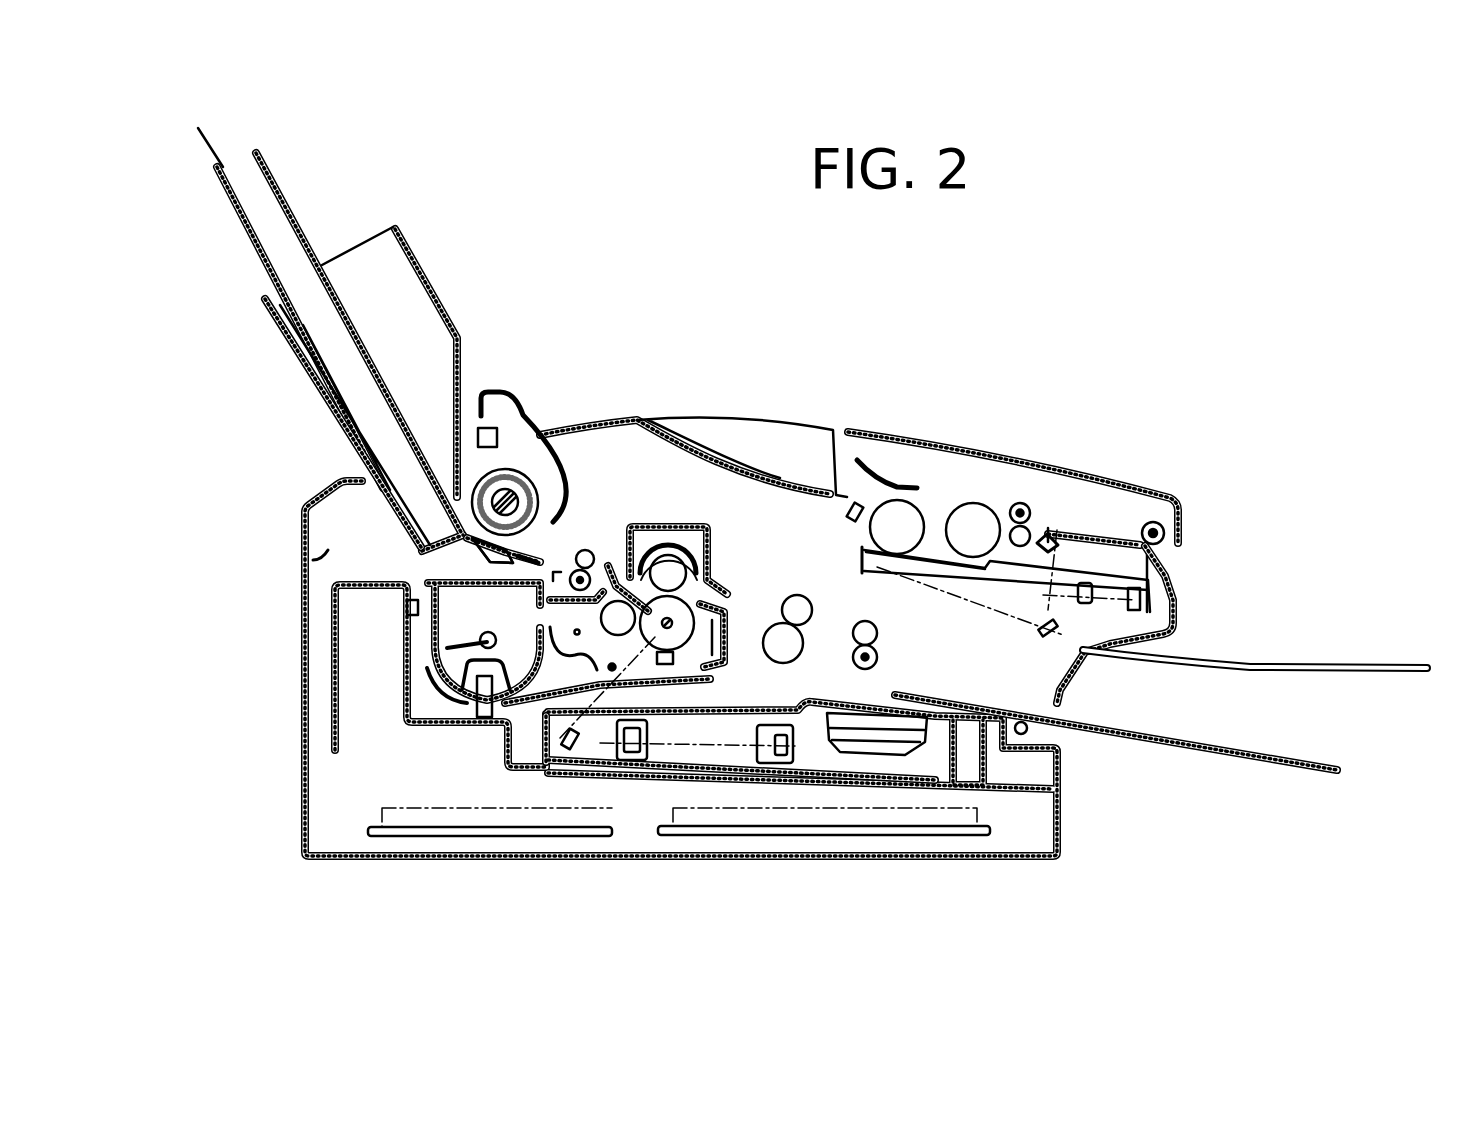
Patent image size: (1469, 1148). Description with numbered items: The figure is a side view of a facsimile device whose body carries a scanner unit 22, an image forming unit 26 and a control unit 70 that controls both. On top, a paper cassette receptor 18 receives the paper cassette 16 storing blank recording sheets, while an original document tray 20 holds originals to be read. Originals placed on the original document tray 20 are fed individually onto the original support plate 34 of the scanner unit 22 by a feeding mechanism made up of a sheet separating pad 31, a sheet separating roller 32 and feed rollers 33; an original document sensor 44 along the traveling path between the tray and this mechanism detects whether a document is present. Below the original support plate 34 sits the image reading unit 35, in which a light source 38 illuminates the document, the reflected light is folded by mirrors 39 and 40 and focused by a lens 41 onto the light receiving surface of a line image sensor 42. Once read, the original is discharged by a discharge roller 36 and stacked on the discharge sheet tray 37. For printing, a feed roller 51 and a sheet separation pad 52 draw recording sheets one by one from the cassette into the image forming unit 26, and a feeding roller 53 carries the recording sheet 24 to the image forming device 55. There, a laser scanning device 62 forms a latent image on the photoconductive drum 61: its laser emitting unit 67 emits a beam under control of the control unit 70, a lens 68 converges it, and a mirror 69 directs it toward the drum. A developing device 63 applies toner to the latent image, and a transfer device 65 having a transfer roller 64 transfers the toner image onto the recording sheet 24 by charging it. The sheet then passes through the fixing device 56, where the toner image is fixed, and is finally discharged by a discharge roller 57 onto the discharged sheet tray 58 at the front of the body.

The paper cassette 16 is at (293, 217).
The paper cassette receptor 18 is at (418, 314).
The original document tray 20 is at (720, 456).
The scanner unit 22 is at (1068, 492).
The recording sheet 24 is at (223, 165).
The image forming unit 26 is at (450, 766).
The sheet separating pad 31 is at (868, 450).
The sheet separating roller 32 is at (912, 513).
The feed rollers 33 is at (1023, 510).
The original support plate 34 is at (1100, 540).
The image reading unit 35 is at (1120, 562).
The discharge roller 36 is at (1160, 520).
The discharge sheet tray 37 is at (1320, 665).
The light source 38 is at (1043, 533).
The mirror 39 is at (1043, 630).
The mirror 40 is at (862, 563).
The lens 41 is at (1083, 605).
The line image sensor 42 is at (1165, 606).
The original document sensor 44 is at (855, 520).
The feed roller 51 is at (510, 488).
The sheet separation pad 52 is at (470, 545).
The feeding roller 53 is at (590, 550).
The image forming device 55 is at (636, 522).
The fixing device 56 is at (774, 600).
The discharge roller 57 is at (880, 636).
The discharged sheet tray 58 is at (1194, 742).
The photoconductive drum 61 is at (690, 660).
The laser scanning device 62 is at (746, 790).
The developing device 63 is at (576, 692).
The transfer roller 64 is at (668, 565).
The transfer device 65 is at (693, 556).
The laser emitting unit 67 is at (900, 785).
The lens 68 is at (788, 785).
The mirror 69 is at (540, 766).
The control unit 70 is at (700, 815).